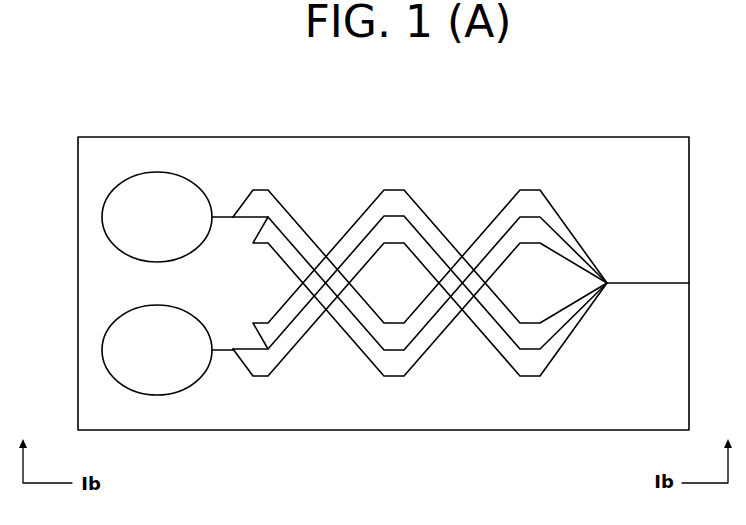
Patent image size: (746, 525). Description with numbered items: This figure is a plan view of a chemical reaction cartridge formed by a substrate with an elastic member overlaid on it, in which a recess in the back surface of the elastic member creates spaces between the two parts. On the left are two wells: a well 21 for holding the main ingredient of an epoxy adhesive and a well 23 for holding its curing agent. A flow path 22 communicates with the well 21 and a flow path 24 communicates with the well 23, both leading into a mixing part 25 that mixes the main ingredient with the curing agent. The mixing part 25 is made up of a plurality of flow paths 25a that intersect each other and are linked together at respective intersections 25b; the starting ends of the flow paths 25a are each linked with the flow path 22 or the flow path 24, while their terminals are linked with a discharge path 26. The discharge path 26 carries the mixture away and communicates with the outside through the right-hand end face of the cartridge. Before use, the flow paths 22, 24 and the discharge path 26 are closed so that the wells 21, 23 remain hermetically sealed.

The well 21 is at (141, 203).
The flow path 22 is at (222, 217).
The well 23 is at (160, 360).
The flow path 24 is at (220, 352).
The mixing part 25 is at (420, 290).
The flow paths 25a is at (428, 350).
The intersections 25b is at (325, 322).
The discharge path 26 is at (658, 283).